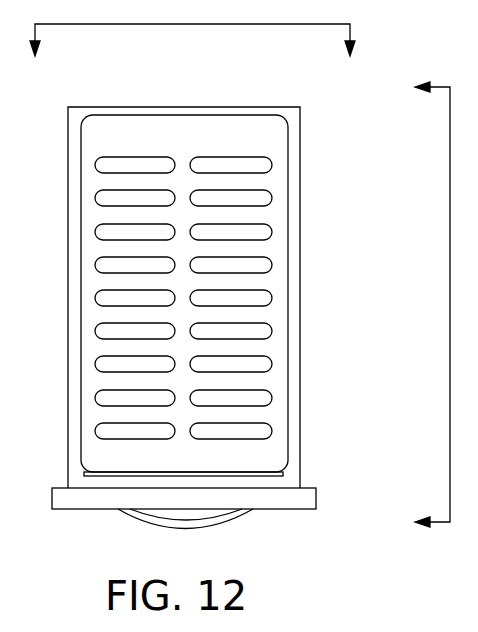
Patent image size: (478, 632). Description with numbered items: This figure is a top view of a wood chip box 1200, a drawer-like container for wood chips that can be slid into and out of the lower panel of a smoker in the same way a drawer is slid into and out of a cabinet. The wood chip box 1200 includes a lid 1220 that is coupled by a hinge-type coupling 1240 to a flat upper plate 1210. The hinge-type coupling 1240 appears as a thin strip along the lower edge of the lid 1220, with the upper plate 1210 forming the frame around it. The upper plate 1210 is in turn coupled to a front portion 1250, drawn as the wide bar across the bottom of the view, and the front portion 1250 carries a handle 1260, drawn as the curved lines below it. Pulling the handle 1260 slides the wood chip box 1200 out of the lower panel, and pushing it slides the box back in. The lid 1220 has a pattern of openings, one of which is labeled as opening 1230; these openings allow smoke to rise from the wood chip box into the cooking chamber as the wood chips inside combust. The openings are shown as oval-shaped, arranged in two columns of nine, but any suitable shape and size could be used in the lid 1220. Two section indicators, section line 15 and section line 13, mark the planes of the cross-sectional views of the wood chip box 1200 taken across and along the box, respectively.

The section line 15- 15 is at (193, 54).
The section line 13- 13 is at (417, 307).
The wood chip box 1200 is at (222, 337).
The flat upper plate 1210 is at (300, 300).
The lid 1220 is at (288, 257).
The opening 1230 is at (272, 363).
The hinge-type coupling 1240 is at (283, 472).
The front portion 1250 is at (316, 496).
The handle 1260 is at (228, 512).